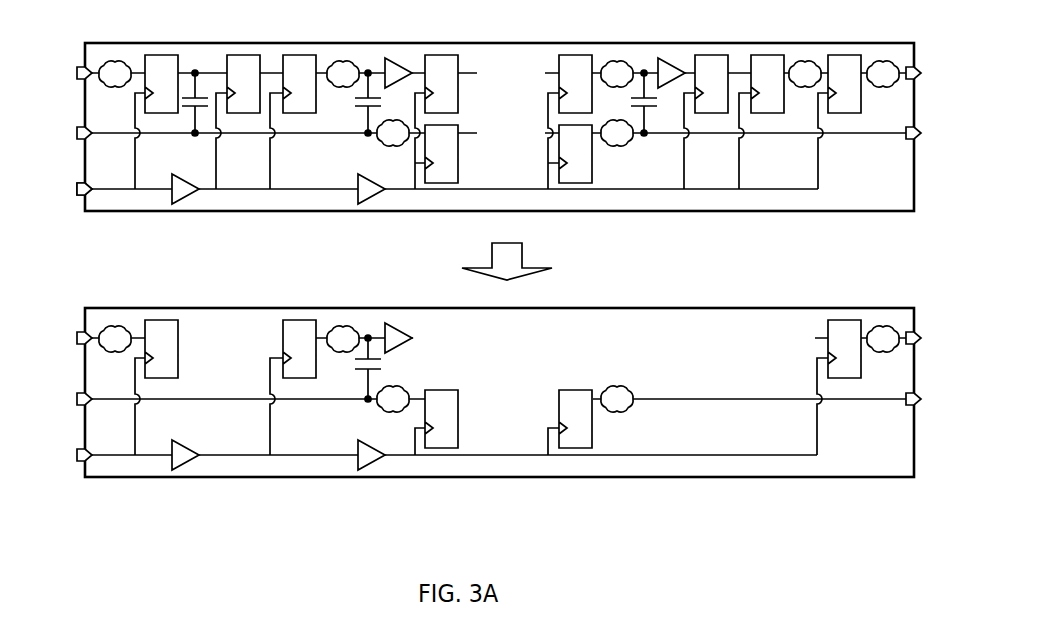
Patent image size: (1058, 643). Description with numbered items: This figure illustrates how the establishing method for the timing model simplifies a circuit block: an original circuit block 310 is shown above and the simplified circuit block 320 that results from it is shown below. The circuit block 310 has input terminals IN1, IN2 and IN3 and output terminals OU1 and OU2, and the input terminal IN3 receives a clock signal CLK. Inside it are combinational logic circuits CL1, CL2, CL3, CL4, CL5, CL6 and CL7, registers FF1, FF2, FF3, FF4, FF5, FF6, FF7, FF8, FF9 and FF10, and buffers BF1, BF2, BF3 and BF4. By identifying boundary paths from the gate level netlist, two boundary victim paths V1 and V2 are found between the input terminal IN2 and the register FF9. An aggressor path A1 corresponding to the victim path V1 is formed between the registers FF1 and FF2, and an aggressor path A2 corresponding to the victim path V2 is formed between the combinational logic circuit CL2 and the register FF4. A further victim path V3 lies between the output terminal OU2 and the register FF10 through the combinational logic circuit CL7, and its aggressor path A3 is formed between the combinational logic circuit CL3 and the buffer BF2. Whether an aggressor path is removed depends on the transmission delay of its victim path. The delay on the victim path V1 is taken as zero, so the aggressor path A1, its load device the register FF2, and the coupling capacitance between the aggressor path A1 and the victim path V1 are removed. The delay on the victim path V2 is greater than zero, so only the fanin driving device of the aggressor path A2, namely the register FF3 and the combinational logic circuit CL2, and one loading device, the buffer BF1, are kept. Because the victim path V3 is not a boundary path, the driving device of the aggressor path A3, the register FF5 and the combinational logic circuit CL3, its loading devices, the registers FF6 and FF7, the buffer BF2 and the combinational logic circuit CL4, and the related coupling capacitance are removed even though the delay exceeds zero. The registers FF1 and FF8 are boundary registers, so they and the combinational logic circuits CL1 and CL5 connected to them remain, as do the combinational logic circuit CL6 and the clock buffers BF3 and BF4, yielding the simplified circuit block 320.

The circuit block 310 is at (868, 212).
The simplified circuit block 320 is at (868, 478).
The input terminal IN1 is at (80, 65).
The input terminal IN2 is at (78, 127).
The input terminal IN3 is at (82, 196).
The clock signal CLK is at (67, 321).
The output terminal OU1 is at (922, 66).
The output terminal OU2 is at (922, 129).
The combinational logic circuit CL1 is at (118, 59).
The combinational logic circuit CL2 is at (345, 59).
The combinational logic circuit CL3 is at (617, 59).
The combinational logic circuit CL4 is at (805, 59).
The combinational logic circuit CL5 is at (885, 59).
The combinational logic circuit CL6 is at (395, 146).
The combinational logic circuit CL7 is at (620, 146).
The register FF1 is at (160, 55).
The register FF2 is at (242, 55).
The register FF3 is at (296, 55).
The register FF4 is at (444, 55).
The register FF5 is at (576, 55).
The register FF6 is at (712, 55).
The register FF7 is at (768, 55).
The register FF8 is at (846, 55).
The register FF9 is at (460, 152).
The register FF10 is at (575, 183).
The buffer BF1 is at (392, 60).
The buffer BF2 is at (665, 59).
The buffer BF3 is at (184, 204).
The buffer BF4 is at (372, 204).
The aggressor path A1 is at (200, 60).
The aggressor path A2 is at (375, 192).
The aggressor path A3 is at (655, 149).
The victim path V1 is at (200, 149).
The victim path V2 is at (359, 281).
The victim path V3 is at (645, 60).